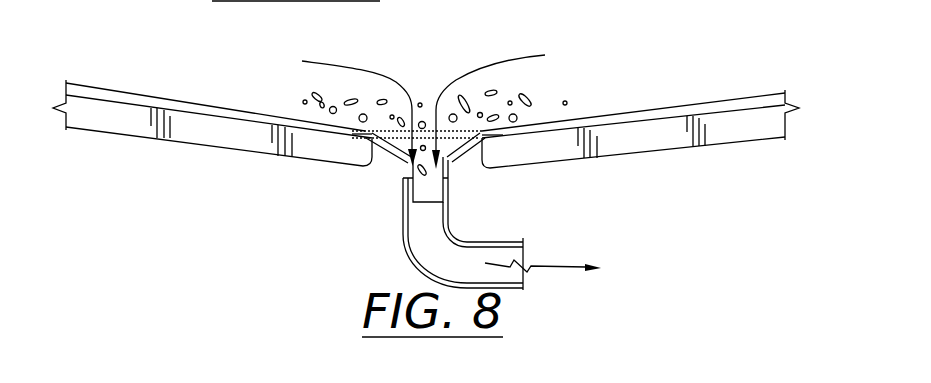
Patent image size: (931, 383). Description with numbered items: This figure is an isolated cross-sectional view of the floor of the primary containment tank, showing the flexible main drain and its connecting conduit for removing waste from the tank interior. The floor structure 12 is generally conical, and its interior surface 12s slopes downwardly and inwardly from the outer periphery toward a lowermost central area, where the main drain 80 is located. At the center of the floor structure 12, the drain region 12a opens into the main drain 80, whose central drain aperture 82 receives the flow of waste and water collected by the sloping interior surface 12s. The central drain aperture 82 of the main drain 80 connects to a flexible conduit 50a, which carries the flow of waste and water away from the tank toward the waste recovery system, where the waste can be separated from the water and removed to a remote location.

The floor structure 12 is at (426, 87).
The drain aperture 12a is at (249, 113).
The interior surface 12s is at (630, 112).
The main drain 80 is at (461, 146).
The central drain aperture 82 is at (405, 177).
The flexible conduit 50a is at (403, 238).